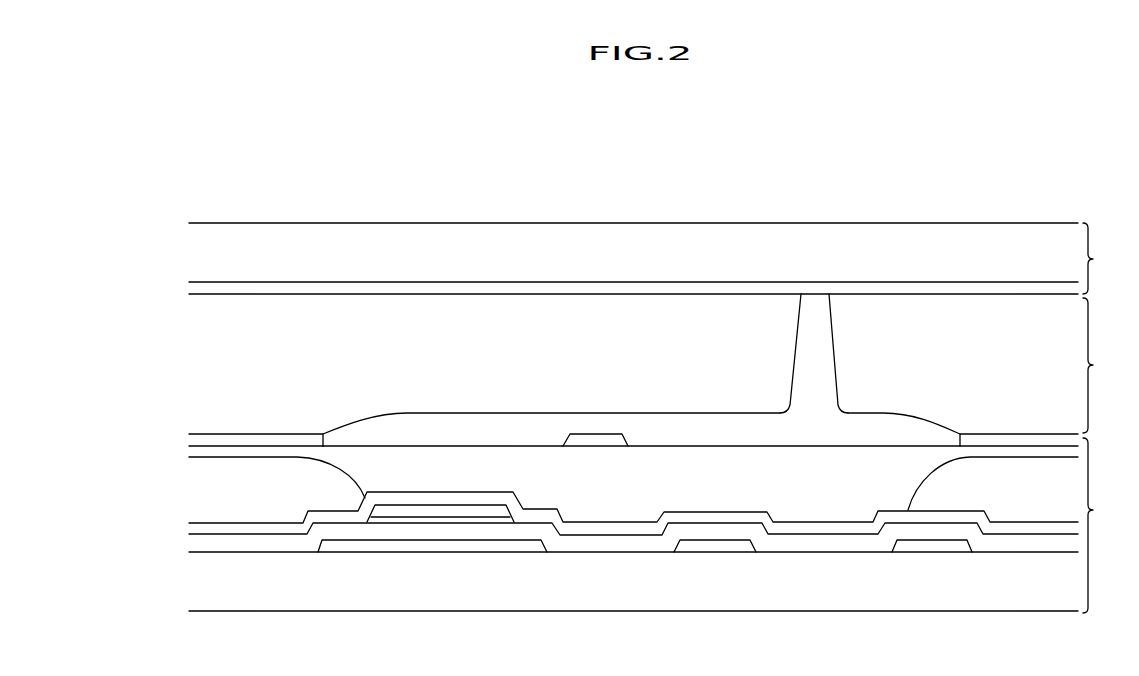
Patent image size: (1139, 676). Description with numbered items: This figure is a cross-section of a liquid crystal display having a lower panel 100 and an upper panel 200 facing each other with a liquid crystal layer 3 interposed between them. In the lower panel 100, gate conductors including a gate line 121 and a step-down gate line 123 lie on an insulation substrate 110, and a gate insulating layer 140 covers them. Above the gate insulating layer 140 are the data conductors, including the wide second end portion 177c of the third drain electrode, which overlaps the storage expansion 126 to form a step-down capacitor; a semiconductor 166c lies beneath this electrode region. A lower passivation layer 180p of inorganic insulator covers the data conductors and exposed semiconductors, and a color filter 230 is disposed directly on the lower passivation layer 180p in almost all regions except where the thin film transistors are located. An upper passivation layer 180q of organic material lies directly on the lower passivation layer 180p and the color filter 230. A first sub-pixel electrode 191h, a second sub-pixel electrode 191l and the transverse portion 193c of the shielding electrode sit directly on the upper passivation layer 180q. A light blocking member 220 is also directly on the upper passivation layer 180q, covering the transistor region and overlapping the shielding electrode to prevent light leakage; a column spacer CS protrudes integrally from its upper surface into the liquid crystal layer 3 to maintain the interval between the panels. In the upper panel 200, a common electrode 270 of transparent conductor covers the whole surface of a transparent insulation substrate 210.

The transparent insulation substrate 210 is at (674, 237).
The common electrode 270 is at (752, 290).
The upper panel 200 is at (1109, 258).
The liquid crystal layer 3 is at (1099, 365).
The lower panel 100 is at (1109, 525).
The column spacer CS is at (825, 347).
The light blocking member 220 is at (728, 433).
The transverse portion 193c is at (593, 442).
The first sub-pixel electrode 191h is at (275, 442).
The second sub-pixel electrode 191l is at (988, 442).
The color filter 230 is at (217, 480).
The upper passivation layer 180q is at (633, 503).
The lower passivation layer 180p is at (585, 528).
The second end portion 177c is at (405, 513).
The semiconductor layer 166c is at (453, 527).
The storage expansion 126 is at (503, 545).
The gate line 121 is at (718, 543).
The step-down gate line 123 is at (934, 545).
The gate insulating layer 140 is at (800, 545).
The insulation substrate 110 is at (865, 598).